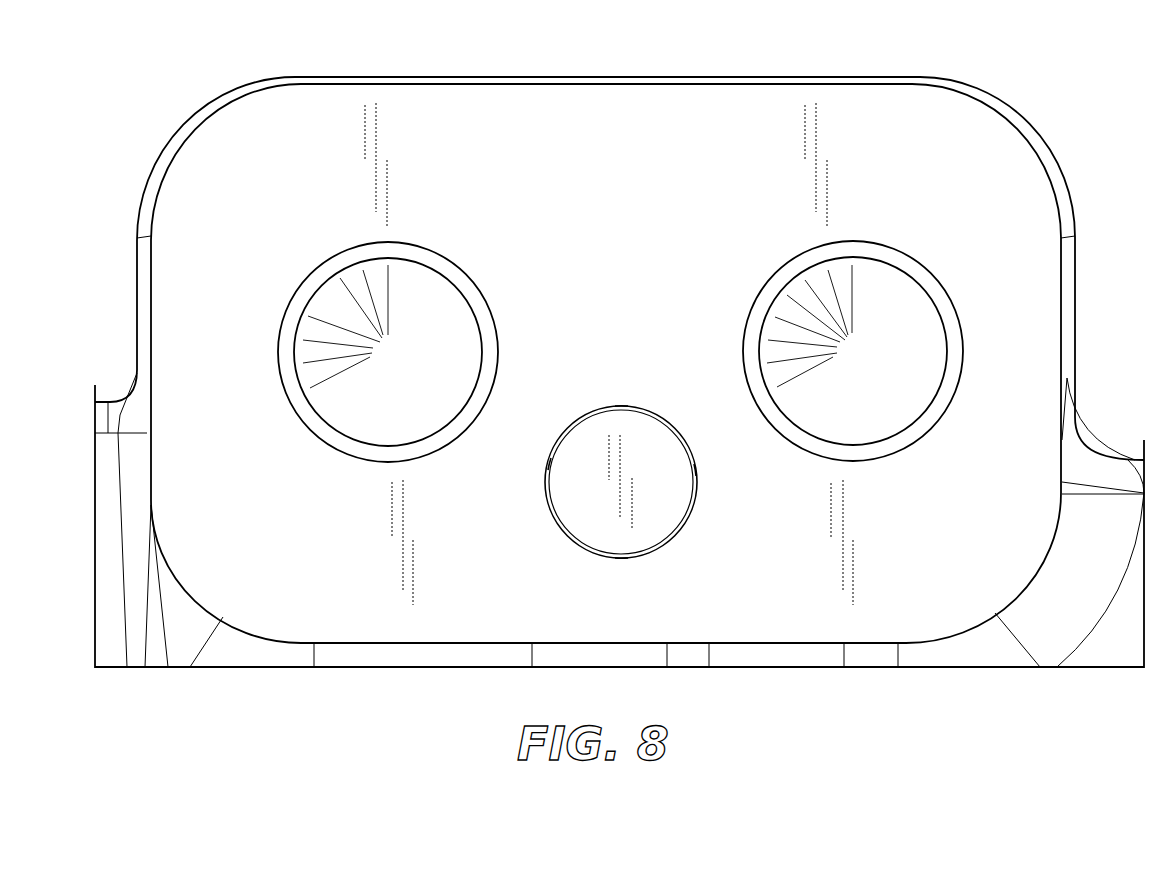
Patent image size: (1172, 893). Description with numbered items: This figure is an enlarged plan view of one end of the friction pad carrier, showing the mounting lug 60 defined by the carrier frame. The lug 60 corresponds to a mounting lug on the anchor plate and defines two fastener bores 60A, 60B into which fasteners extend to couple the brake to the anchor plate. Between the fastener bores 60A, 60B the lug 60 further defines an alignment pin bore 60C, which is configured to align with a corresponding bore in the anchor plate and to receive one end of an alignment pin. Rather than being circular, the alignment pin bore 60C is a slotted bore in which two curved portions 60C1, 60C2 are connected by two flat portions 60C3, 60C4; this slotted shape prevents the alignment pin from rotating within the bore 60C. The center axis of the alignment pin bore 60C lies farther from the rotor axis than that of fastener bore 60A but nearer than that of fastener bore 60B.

The mounting lug 60 is at (697, 153).
The fastener bore 60A is at (917, 330).
The fastener bore 60B is at (377, 285).
The alignment pin bore 60C is at (622, 493).
The curved portion 60C1 is at (547, 482).
The curved portion 60C2 is at (695, 470).
The flat portion 60C3 is at (622, 408).
The flat portion 60C4 is at (622, 556).